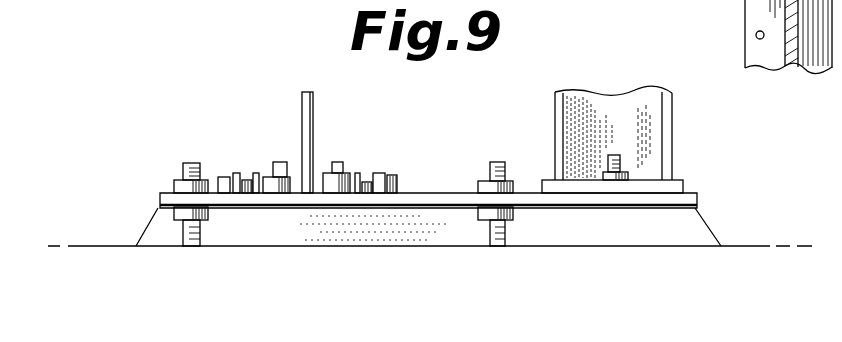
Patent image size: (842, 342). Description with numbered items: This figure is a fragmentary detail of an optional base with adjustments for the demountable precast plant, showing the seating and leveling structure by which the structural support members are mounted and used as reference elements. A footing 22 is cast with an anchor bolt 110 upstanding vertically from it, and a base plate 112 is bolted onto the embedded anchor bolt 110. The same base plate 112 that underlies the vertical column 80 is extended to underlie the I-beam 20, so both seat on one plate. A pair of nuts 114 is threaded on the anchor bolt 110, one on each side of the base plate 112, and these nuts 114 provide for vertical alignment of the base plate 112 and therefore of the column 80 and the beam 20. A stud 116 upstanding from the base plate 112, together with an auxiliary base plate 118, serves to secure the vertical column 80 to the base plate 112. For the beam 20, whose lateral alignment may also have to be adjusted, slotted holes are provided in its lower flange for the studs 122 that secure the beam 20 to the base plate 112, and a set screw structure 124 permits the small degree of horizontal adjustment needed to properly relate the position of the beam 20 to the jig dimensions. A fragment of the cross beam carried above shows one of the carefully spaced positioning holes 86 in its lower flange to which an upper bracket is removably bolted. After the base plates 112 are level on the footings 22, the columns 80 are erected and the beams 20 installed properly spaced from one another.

The beam 20 is at (312, 116).
The footing 22 is at (698, 227).
The vertical column 80 is at (555, 106).
The positioning hole 86 is at (756, 33).
The anchor bolt 110 is at (191, 238).
The base plate 112 is at (160, 196).
The nut 114 is at (178, 214).
The stud 116 is at (618, 157).
The auxiliary base plate 118 is at (674, 187).
The stud 122 is at (278, 163).
The set screw structure 124 is at (250, 188).